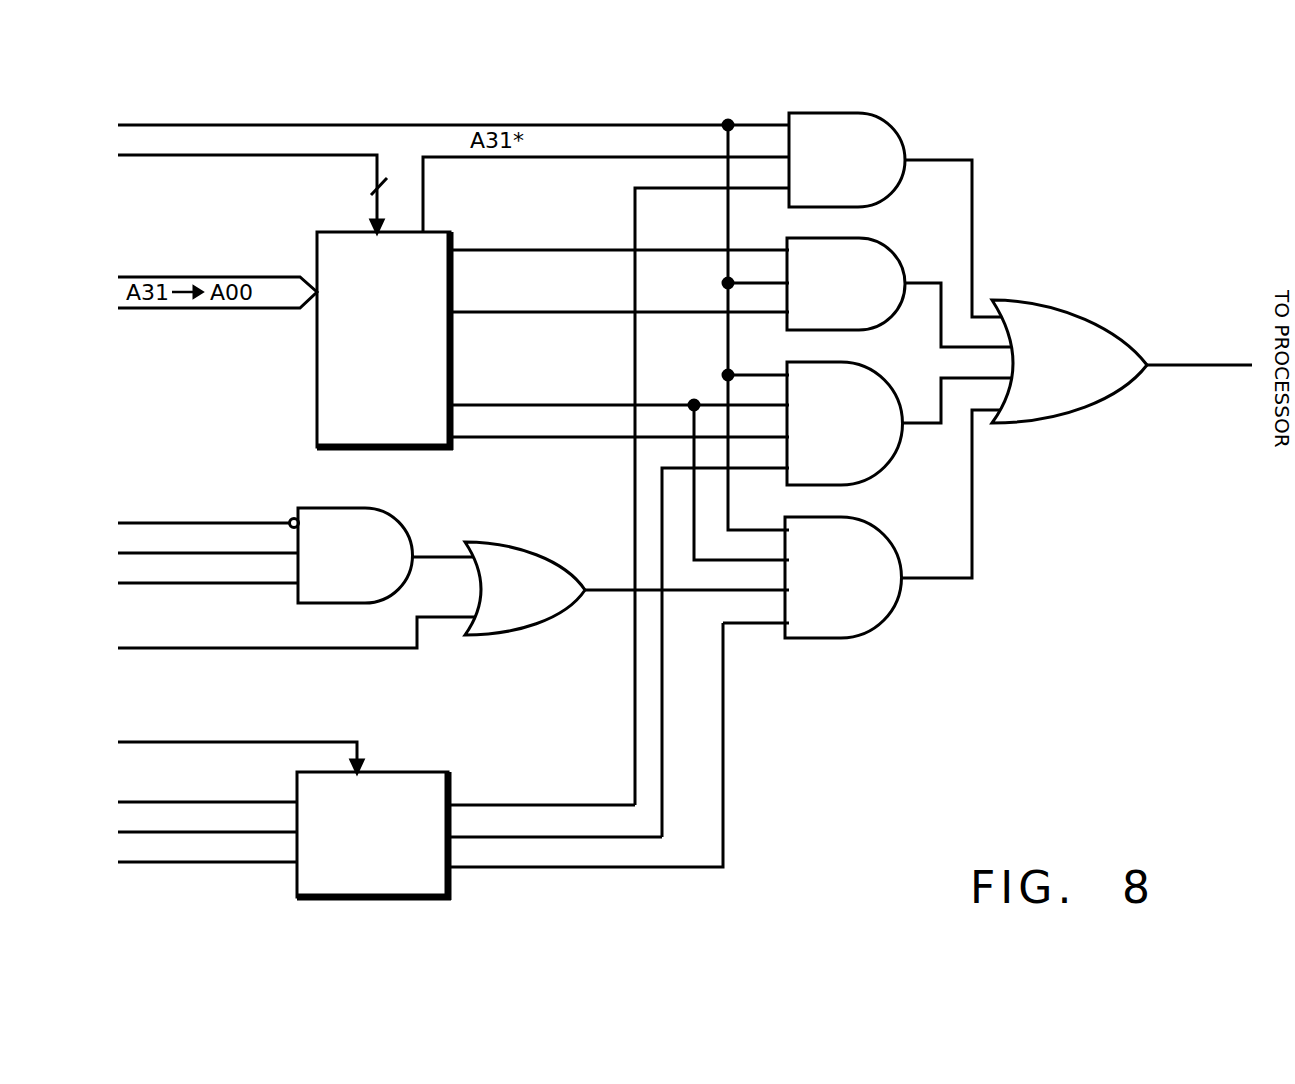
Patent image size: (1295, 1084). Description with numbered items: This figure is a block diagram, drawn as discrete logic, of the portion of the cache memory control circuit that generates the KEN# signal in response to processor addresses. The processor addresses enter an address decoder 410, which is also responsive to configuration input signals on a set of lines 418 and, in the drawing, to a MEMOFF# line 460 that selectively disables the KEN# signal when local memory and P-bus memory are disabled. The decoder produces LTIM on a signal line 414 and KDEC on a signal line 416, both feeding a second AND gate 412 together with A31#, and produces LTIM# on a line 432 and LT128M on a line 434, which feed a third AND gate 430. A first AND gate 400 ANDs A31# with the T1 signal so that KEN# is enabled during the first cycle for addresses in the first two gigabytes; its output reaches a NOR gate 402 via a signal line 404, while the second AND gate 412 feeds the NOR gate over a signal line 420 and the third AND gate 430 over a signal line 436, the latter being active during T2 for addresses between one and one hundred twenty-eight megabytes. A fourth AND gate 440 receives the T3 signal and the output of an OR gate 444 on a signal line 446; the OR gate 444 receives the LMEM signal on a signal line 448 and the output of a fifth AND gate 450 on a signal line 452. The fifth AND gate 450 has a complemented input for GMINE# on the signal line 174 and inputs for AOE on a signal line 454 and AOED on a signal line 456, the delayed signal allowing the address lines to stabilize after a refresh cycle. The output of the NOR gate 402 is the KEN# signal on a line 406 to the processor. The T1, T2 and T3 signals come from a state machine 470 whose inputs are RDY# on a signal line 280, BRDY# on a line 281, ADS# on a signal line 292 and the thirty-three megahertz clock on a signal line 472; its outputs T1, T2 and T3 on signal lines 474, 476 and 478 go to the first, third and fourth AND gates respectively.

The MEMOFF* line 460 is at (365, 125).
The set of lines 418 is at (133, 156).
The address decoder 410 is at (347, 232).
The signal line 414 is at (583, 250).
The signal line 416 is at (590, 312).
The line 432 is at (606, 405).
The line 434 is at (573, 437).
The first AND gate 400 is at (893, 130).
The signal line 404 is at (918, 160).
The second AND gate 412 is at (850, 238).
The signal line 420 is at (925, 283).
The third AND gate 430 is at (838, 485).
The signal line 436 is at (915, 428).
The fourth AND gate 440 is at (827, 638).
The NOR gate 402 is at (1112, 322).
The line 406 is at (1148, 372).
The fifth AND gate 450 is at (367, 508).
The signal line 174 is at (230, 523).
The signal line 454 is at (253, 553).
The signal line 456 is at (213, 583).
The signal line 452 is at (417, 545).
The signal line 448 is at (165, 648).
The OR gate 444 is at (507, 635).
The signal line 446 is at (617, 585).
The state machine 470 is at (382, 772).
The signal line 472 is at (320, 742).
The signal line 292 is at (197, 802).
The BRDY* signal line 281 is at (227, 832).
The signal line 280 is at (205, 862).
The signal line 474 is at (515, 805).
The signal line 476 is at (660, 825).
The signal line 478 is at (505, 867).